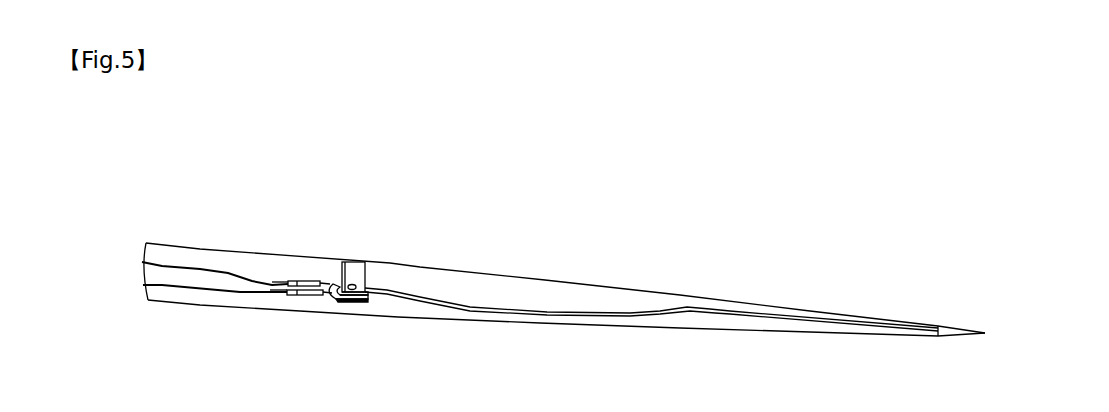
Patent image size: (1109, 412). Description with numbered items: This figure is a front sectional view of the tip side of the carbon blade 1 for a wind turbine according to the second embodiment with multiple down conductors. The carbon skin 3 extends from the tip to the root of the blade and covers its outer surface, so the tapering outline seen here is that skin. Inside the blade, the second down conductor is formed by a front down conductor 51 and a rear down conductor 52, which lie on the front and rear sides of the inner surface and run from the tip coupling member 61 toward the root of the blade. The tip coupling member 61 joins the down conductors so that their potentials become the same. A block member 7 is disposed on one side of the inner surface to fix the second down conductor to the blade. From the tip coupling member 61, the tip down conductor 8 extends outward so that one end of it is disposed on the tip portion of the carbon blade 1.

The carbon blade 1 is at (738, 190).
The carbon skin 3 is at (456, 285).
The tip down conductor 8 is at (542, 312).
The front down conductor 51 is at (182, 262).
The rear down conductor 52 is at (188, 295).
The tip coupling member 61 is at (355, 270).
The block member 7 is at (335, 303).